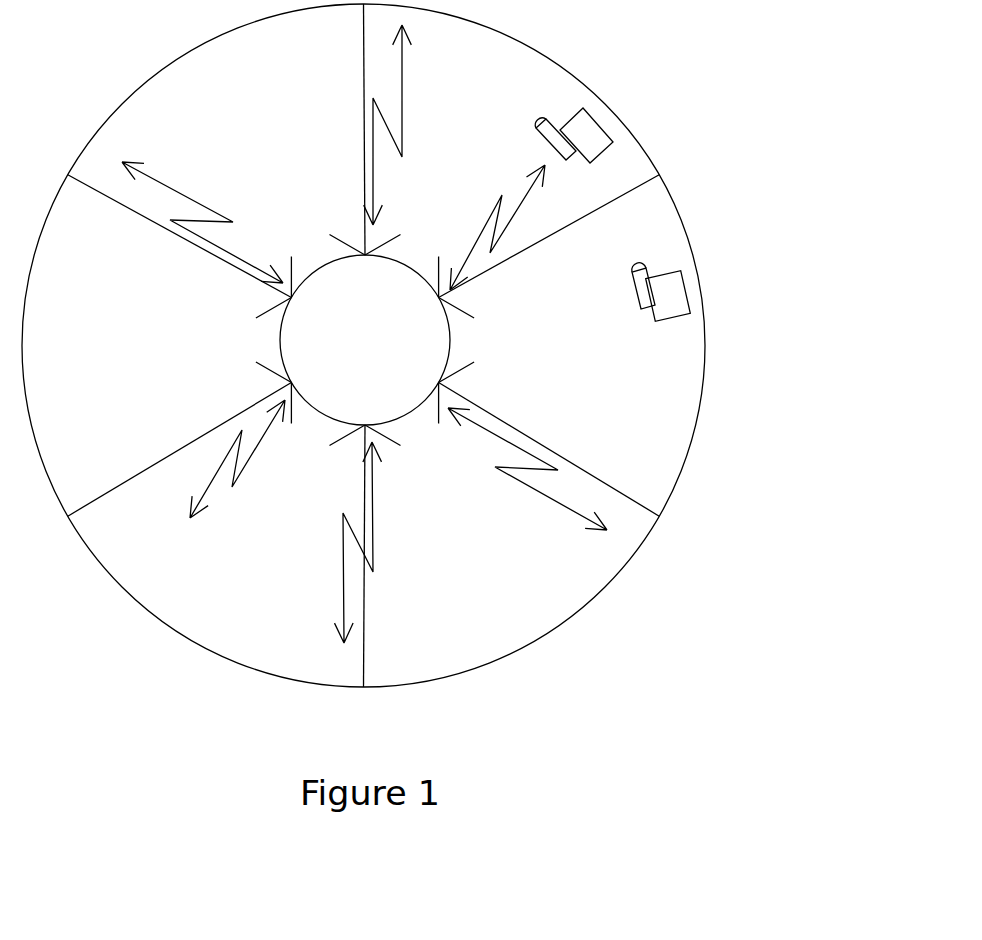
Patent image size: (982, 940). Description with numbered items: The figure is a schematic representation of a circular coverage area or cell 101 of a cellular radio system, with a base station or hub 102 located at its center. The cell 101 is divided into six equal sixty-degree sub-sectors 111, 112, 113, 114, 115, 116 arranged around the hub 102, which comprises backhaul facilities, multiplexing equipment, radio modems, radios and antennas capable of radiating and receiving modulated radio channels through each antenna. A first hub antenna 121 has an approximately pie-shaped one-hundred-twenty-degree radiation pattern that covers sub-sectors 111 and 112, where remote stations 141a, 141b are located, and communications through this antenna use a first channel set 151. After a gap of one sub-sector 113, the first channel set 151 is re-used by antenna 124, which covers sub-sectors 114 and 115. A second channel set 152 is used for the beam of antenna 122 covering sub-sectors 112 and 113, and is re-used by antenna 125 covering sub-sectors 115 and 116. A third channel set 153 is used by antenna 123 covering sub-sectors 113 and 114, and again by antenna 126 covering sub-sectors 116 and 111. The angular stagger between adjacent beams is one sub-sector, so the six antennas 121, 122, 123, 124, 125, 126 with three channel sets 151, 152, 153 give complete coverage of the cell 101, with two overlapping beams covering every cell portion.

The circular coverage area 101 is at (721, 188).
The hub 102 is at (398, 333).
The sub-sector 111 is at (549, 191).
The sub-sector 112 is at (571, 434).
The sub-sector 113 is at (450, 556).
The sub-sector 114 is at (180, 508).
The sub-sector 115 is at (164, 262).
The sub-sector 116 is at (282, 129).
The first hub antenna 121 is at (439, 293).
The antenna 122 is at (433, 393).
The antenna 123 is at (365, 422).
The antenna 124 is at (303, 393).
The antenna 125 is at (295, 293).
The antenna 126 is at (365, 262).
The remote station 141a is at (601, 118).
The remote station 141b is at (690, 288).
The first channel set 151 is at (521, 210).
The second channel set 152 is at (182, 227).
The third channel set 153 is at (368, 135).